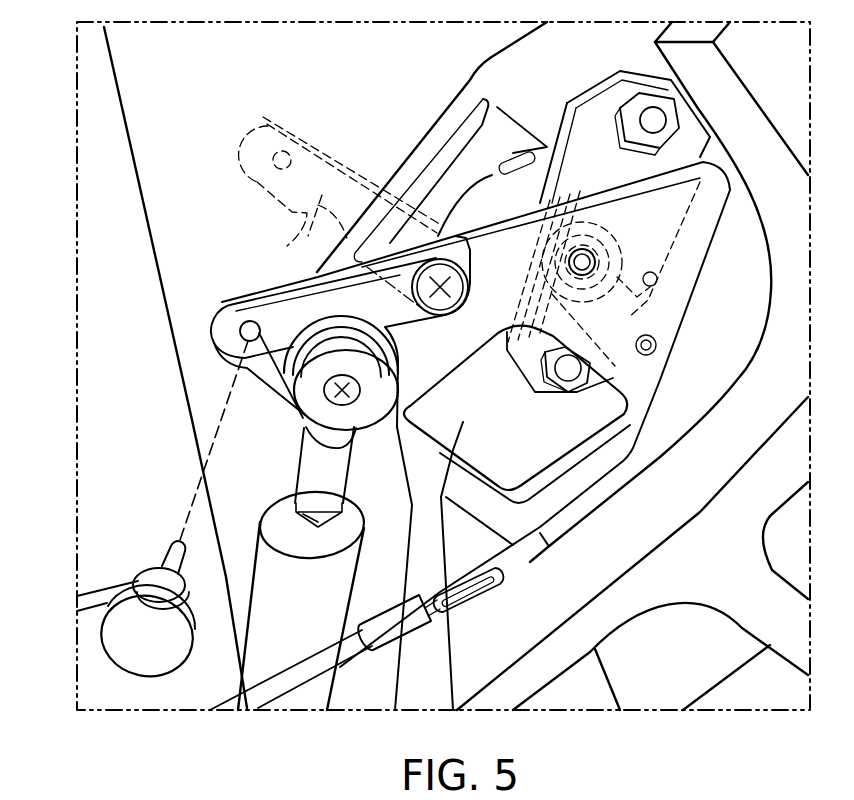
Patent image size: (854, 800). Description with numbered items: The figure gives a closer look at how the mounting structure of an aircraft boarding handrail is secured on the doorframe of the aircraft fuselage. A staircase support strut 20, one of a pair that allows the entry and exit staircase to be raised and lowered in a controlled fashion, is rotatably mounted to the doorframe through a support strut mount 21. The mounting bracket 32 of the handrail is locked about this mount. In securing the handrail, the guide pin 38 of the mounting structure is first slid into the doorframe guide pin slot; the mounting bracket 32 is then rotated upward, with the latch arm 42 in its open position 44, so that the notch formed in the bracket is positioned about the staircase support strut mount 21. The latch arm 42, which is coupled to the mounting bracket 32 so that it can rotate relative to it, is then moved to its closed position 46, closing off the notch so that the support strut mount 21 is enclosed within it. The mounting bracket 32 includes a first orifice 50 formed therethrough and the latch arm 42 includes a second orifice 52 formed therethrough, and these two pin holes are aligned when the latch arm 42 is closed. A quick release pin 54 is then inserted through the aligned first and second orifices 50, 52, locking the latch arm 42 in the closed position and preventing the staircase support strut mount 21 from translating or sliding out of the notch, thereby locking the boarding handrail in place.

The staircase support strut 20 is at (266, 635).
The support strut mount 21 is at (294, 372).
The mounting bracket 32 is at (481, 317).
The guide pin 38 is at (586, 258).
The latch arm 42 is at (320, 293).
The open position of the latch arm 44 is at (230, 141).
The closed position of the latch arm 46 is at (212, 371).
The first orifice 50 is at (246, 326).
The second orifice 52 is at (215, 378).
The quick release pin 54 is at (153, 588).